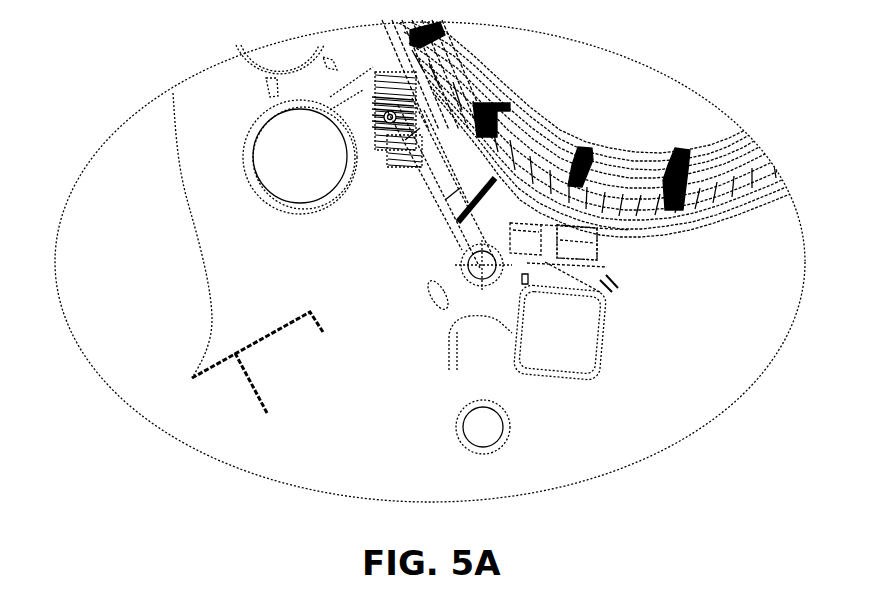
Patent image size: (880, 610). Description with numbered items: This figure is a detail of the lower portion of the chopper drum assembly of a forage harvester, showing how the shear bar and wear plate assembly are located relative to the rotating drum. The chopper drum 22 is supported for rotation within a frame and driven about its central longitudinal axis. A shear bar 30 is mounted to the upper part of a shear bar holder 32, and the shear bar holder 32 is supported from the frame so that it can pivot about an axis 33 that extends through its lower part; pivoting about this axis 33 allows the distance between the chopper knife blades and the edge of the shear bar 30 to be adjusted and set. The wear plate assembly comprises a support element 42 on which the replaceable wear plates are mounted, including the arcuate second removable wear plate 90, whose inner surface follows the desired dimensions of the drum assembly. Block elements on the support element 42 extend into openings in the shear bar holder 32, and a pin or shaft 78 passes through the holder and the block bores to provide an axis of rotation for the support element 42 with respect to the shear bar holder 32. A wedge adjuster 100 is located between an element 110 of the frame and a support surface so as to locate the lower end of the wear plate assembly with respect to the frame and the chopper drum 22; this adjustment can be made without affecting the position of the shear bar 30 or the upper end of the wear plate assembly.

The chopper drum 22 is at (665, 106).
The shear bar 30 is at (384, 74).
The shear bar holder 32 is at (432, 198).
The axis 33 is at (470, 275).
The support element 42 is at (603, 242).
The pin or shaft 78 is at (383, 125).
The second removable wear plate 90 is at (690, 220).
The wedge adjuster 100 is at (617, 297).
The element of the frame 110 is at (560, 380).